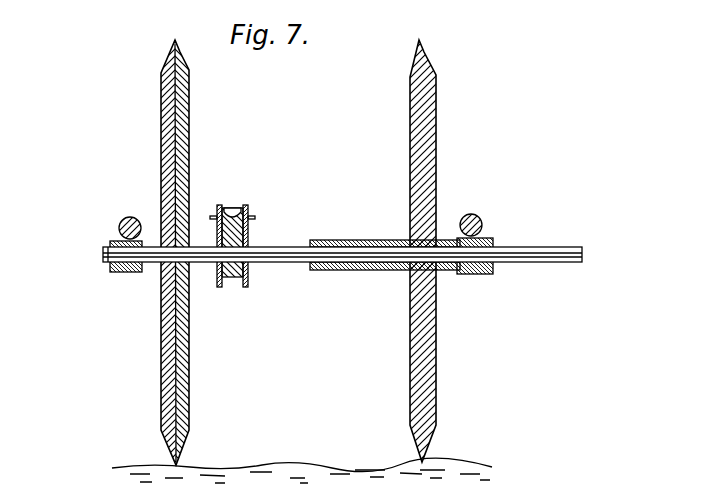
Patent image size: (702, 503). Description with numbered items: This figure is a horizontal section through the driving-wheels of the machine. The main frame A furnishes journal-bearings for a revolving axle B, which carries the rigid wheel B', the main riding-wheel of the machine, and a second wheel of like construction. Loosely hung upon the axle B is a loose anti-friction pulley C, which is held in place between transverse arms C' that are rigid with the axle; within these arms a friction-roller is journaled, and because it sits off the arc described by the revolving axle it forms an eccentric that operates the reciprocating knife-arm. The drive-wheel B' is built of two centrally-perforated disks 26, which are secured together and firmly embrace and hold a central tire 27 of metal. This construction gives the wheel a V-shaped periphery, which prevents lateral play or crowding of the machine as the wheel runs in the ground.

The rigid wheel B' is at (190, 252).
The revolving axle B is at (438, 251).
The main frame A is at (492, 220).
The loose anti-friction pulley C is at (237, 263).
The transverse arms C' is at (234, 251).
The centrally-perforated disks 26 is at (176, 389).
The central tire 27 is at (176, 436).